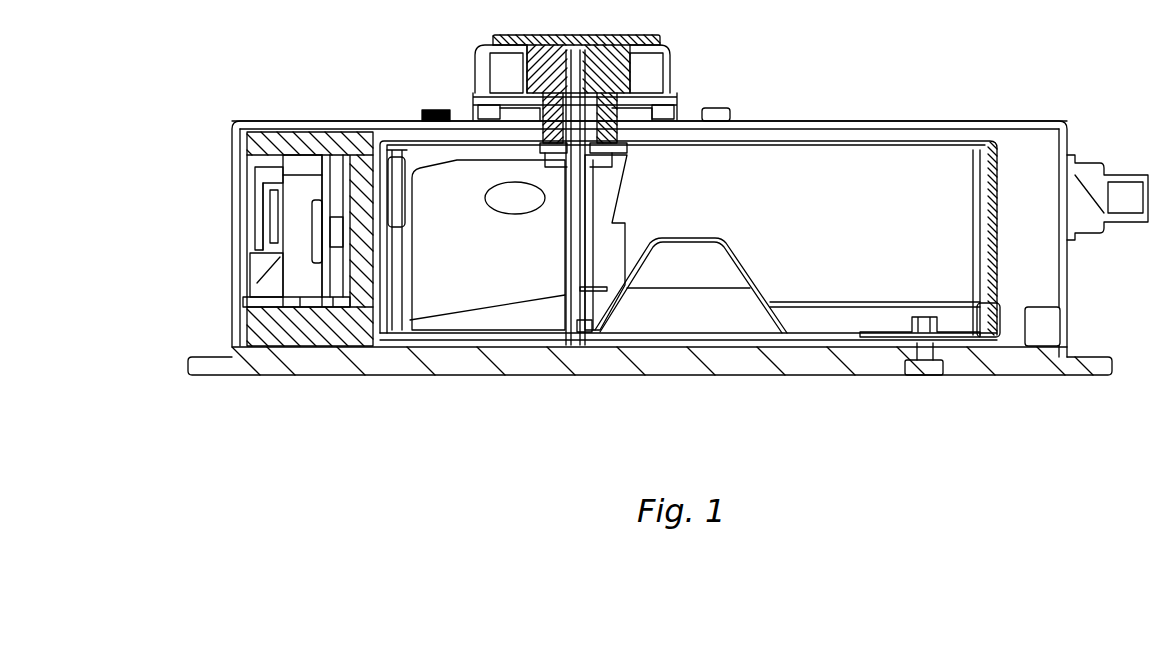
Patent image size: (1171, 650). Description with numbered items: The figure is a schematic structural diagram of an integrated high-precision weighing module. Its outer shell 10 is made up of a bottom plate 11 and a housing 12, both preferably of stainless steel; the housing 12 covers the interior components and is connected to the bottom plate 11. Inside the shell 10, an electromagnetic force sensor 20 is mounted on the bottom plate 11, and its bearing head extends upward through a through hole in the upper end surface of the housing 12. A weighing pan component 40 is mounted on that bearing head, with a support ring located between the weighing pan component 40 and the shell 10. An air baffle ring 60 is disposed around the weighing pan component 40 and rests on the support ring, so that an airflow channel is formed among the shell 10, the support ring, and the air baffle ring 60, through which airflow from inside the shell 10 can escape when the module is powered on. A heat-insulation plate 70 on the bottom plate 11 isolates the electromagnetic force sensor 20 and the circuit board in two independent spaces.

The shell 10 is at (985, 100).
The bottom plate 11 is at (880, 125).
The housing 12 is at (757, 363).
The electromagnetic force sensor 20 is at (997, 195).
The weighing pan component 40 is at (650, 57).
The air baffle ring 60 is at (482, 70).
The heat-insulation plate 70 is at (287, 128).